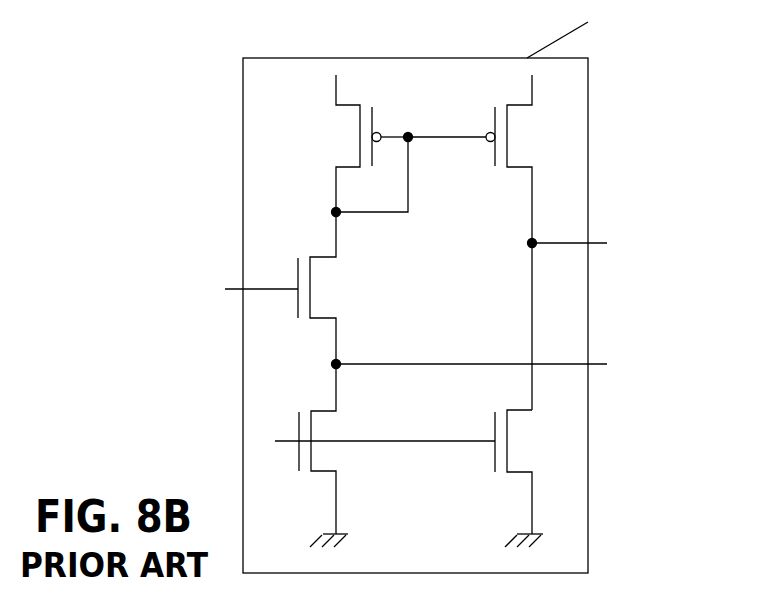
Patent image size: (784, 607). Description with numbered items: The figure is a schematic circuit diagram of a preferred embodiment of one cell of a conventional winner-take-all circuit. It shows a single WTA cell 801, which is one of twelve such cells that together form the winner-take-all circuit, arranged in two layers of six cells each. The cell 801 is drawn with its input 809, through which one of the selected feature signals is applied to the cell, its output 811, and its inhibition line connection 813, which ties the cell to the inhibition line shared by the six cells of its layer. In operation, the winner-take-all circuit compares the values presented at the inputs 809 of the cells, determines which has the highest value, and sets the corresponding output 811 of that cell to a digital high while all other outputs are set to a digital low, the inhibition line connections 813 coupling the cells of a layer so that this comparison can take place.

The WTA cell 801 is at (439, 286).
The input 809 is at (230, 301).
The output 811 is at (618, 261).
The inhibition line connection 813 is at (524, 368).